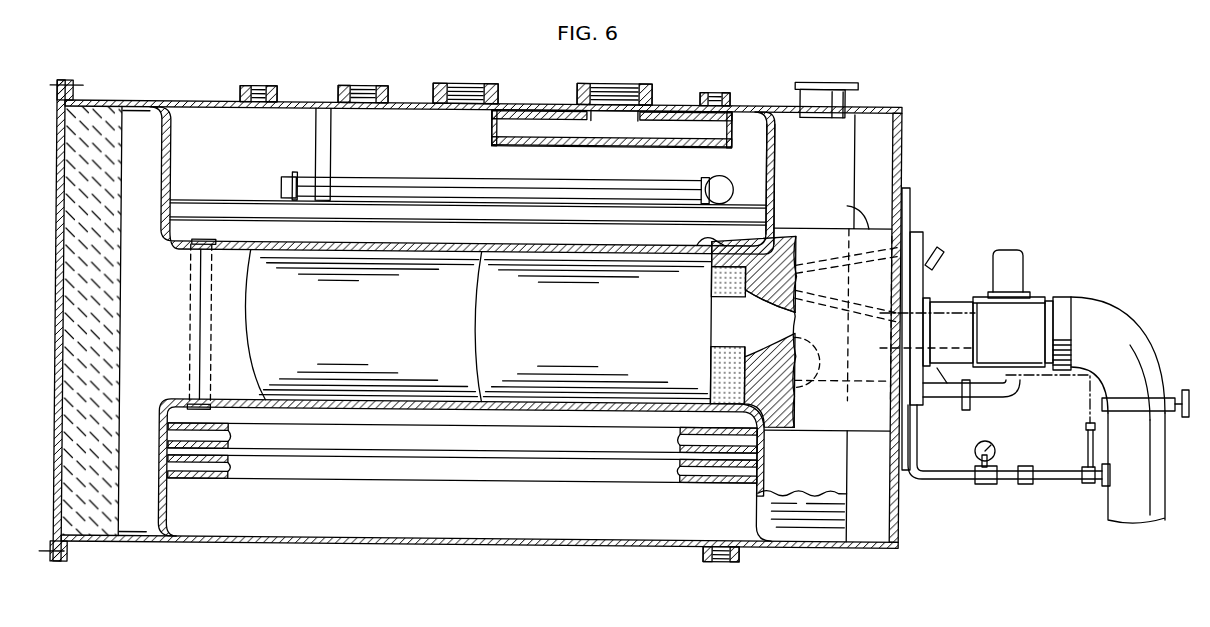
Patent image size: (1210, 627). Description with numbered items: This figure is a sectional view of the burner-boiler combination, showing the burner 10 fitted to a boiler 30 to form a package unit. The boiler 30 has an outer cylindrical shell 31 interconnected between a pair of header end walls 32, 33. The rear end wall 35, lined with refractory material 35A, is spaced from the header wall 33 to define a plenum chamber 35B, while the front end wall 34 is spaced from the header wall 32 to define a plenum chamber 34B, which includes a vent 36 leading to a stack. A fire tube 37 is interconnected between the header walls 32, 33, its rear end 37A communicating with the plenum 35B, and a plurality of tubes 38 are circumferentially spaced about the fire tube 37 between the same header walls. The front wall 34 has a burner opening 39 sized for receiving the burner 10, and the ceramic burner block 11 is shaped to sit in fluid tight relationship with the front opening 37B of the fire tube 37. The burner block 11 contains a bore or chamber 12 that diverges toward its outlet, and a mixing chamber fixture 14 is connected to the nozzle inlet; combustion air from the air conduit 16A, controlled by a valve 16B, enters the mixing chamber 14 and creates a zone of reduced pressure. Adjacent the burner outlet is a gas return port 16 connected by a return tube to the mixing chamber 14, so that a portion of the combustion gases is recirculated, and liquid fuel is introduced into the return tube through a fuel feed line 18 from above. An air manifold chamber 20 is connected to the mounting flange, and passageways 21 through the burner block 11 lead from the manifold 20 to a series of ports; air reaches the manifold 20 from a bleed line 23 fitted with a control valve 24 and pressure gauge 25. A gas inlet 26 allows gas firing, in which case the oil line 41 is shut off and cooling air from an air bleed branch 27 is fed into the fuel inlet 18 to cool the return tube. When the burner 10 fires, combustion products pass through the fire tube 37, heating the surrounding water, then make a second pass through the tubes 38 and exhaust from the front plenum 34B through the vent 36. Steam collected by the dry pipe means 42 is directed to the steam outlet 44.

The burner 10 is at (955, 237).
The burner nozzle 11 is at (730, 254).
The bore or chamber 12 is at (775, 282).
The mixing chamber fixture 14 is at (1035, 310).
The gas return port 16 is at (745, 344).
The air conduit 16A is at (1153, 488).
The valve 16B is at (1150, 382).
The fuel feed line 18 is at (937, 372).
The air manifold chamber 20 is at (912, 235).
The conduits or passageways 21 is at (782, 259).
The bleed line 23 is at (1070, 481).
The control valve 24 is at (1028, 485).
The pressure gauge 25 is at (985, 441).
The gas inlet 26 is at (1018, 262).
The air bleed branch 27 is at (1085, 440).
The boiler 30 is at (488, 293).
The outer cylindrical shell 31 is at (295, 100).
The header end wall 32 is at (777, 172).
The header end wall 33 is at (172, 163).
The front end wall 34 is at (903, 133).
The plenum chamber 34B is at (867, 524).
The end wall 35 is at (54, 450).
The refractory material 35A is at (92, 112).
The plenum chamber 35B is at (138, 130).
The vent 36 is at (812, 75).
The fire tube 37 is at (396, 331).
The rear end of fire tube 37A is at (202, 379).
The front opening of fire tube 37B is at (712, 242).
The tubes 38 is at (210, 208).
The burner opening 39 is at (848, 199).
The oil line 41 is at (1058, 380).
The dry pipe means 42 is at (527, 125).
The steam outlet 44 is at (608, 80).